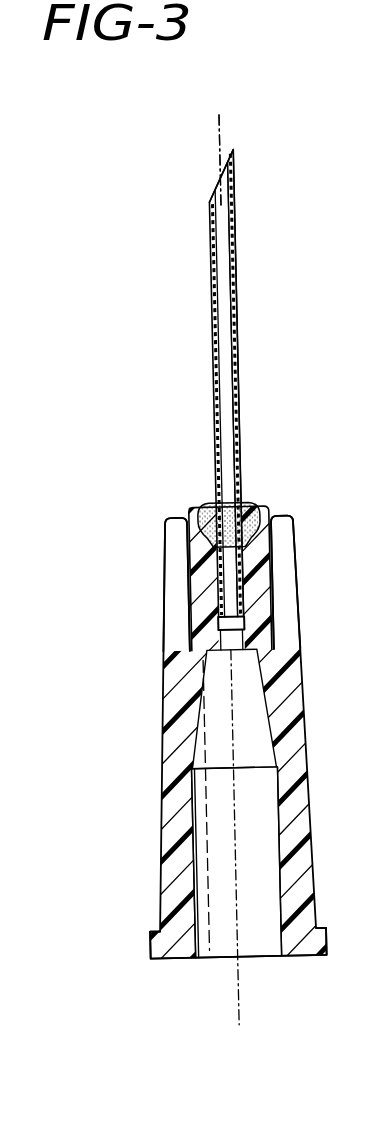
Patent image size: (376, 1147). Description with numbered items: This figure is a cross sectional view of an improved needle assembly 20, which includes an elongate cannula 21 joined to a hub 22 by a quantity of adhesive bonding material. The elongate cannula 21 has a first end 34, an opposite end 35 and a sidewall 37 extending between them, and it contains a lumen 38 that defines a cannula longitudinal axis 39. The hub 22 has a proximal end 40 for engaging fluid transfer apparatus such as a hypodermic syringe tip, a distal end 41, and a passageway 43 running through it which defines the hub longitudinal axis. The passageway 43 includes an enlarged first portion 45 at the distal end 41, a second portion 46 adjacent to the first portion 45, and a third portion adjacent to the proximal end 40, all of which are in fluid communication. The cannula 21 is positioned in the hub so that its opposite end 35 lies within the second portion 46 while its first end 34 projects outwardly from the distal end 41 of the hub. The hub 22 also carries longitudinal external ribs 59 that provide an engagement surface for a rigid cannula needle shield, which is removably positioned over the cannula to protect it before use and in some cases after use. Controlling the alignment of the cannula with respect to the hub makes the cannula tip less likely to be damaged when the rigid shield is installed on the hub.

The needle assembly 20 is at (100, 397).
The elongate cannula 21 is at (212, 302).
The hub 22 is at (160, 750).
The first end 34 is at (231, 152).
The opposite end 35 is at (243, 623).
The sidewall 37 is at (232, 255).
The lumen 38 is at (228, 353).
The cannula longitudinal axis 39 is at (217, 147).
The proximal end 40 is at (160, 927).
The distal end 41 is at (263, 505).
The passageway 43 is at (222, 940).
The first portion 45 is at (190, 543).
The second portion 46 is at (190, 652).
The longitudinal external ribs 59 is at (295, 560).